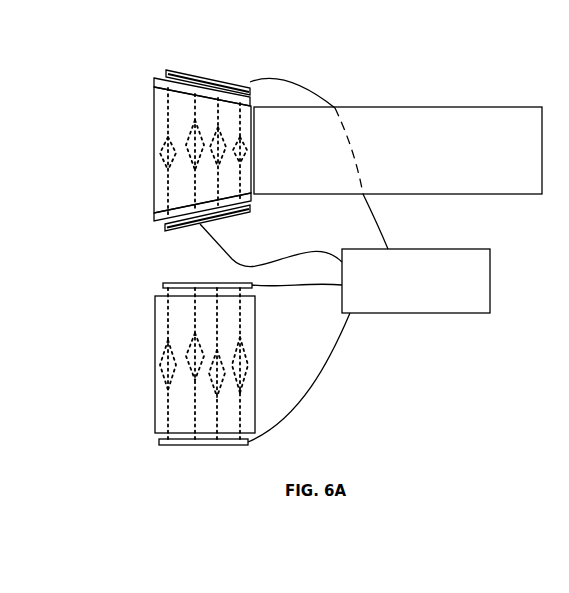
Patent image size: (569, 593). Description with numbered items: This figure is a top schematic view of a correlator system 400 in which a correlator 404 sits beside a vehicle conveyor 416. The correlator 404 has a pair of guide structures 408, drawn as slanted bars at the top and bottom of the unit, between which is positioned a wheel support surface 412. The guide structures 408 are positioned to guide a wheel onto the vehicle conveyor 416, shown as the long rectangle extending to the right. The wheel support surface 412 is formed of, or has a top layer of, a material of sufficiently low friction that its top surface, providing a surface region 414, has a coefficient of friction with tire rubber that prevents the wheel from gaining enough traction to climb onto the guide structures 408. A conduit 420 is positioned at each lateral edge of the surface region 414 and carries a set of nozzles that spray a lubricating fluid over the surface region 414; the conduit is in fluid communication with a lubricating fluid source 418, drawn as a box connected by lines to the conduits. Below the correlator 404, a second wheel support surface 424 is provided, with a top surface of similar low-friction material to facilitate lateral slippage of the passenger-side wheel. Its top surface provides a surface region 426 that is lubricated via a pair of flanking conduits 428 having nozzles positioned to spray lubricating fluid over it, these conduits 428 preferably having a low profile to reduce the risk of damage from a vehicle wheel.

The correlator system 400 is at (176, 21).
The correlator 404 is at (204, 50).
The guide structures 408 is at (160, 82).
The wheel support surface 412 is at (154, 122).
The surface region 414 is at (170, 168).
The vehicle conveyor 416 is at (377, 107).
The lubricating fluid source 418 is at (429, 292).
The conduit 420 is at (228, 81).
The second wheel support surface 424 is at (155, 337).
The surface region 426 is at (155, 385).
The conduits 428 is at (173, 283).